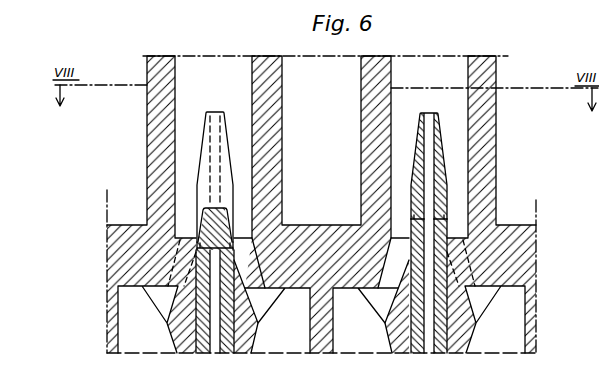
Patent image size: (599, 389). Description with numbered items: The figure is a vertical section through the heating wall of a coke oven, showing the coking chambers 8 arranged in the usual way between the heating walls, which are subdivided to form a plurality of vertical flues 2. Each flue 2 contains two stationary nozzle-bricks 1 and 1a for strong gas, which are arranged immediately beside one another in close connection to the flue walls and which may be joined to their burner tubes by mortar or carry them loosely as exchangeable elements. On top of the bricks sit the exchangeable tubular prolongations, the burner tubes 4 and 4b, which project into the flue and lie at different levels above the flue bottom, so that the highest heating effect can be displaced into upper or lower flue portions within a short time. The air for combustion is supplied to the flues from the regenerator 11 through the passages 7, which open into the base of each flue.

The nozzle-brick 1 is at (440, 306).
The nozzle-brick 1a is at (197, 305).
The vertical flue 2 is at (321, 145).
The burner tube 4 is at (205, 157).
The burner tube 4b is at (199, 235).
The passage 7 is at (321, 280).
The coking chamber 8 is at (318, 181).
The regenerator 11 is at (321, 319).